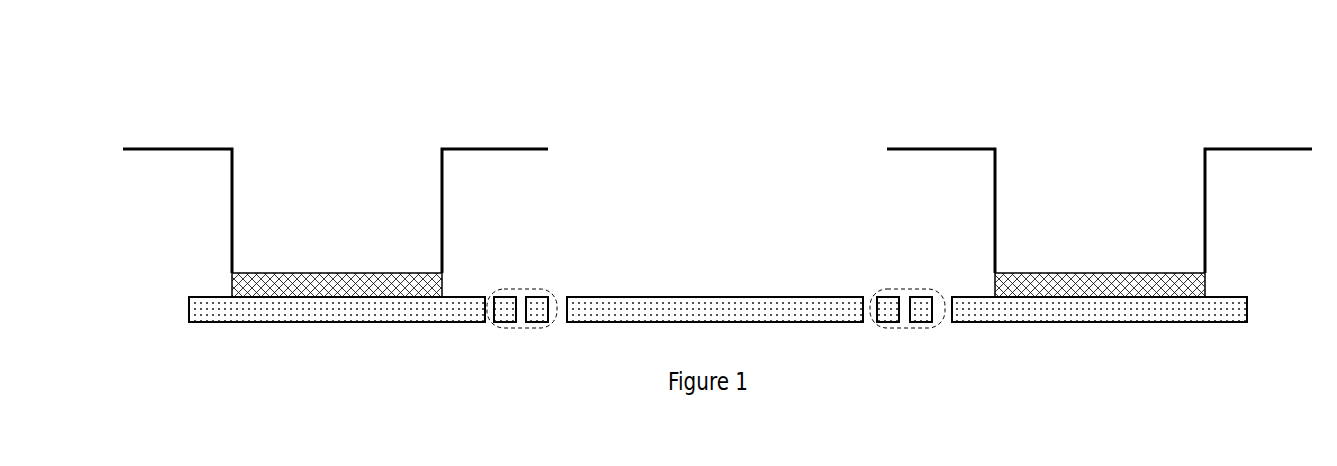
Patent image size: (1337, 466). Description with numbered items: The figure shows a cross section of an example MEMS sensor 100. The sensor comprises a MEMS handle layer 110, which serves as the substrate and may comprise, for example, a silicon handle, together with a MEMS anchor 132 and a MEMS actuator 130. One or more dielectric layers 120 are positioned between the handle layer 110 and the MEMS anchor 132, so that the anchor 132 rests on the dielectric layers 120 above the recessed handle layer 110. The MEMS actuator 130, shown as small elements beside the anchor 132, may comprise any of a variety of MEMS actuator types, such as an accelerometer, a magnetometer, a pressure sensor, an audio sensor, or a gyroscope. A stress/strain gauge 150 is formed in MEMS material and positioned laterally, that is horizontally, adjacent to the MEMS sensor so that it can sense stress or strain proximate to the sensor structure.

The semiconductor device assembly 100 is at (392, 91).
The MEMS handle layer 110 is at (717, 211).
The dielectric layer 120 is at (442, 277).
The MEMS actuator 130 is at (535, 290).
The MEMS anchor 132 is at (189, 317).
The stress/strain gauge 150 is at (693, 296).